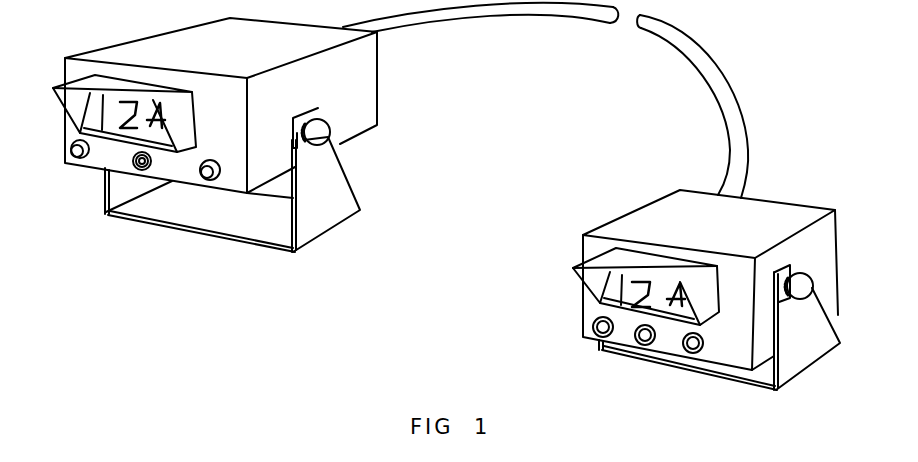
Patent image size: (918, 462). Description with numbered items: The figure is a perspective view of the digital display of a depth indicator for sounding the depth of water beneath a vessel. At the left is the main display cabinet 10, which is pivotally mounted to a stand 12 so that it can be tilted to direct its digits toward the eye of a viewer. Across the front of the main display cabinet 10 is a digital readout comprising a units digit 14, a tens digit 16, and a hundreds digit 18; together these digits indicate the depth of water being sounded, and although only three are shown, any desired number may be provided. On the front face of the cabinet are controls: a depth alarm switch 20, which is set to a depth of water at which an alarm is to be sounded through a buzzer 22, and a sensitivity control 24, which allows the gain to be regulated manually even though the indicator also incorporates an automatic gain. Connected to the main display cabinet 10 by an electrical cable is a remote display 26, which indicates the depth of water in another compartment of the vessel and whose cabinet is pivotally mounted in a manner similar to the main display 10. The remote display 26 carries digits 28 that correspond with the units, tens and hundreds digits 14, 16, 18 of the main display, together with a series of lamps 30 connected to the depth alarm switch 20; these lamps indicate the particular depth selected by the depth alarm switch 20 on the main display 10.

The main display cabinet 10 is at (378, 90).
The stand 12 is at (352, 192).
The units digit 14 is at (100, 137).
The tens digit 16 is at (108, 216).
The hundreds digit 18 is at (155, 134).
The depth alarm switch 20 is at (78, 158).
The buzzer 22 is at (118, 134).
The sensitivity control 24 is at (209, 180).
The remote display 26 is at (787, 203).
The digits 28 is at (605, 297).
The series of lamps 30 is at (692, 354).